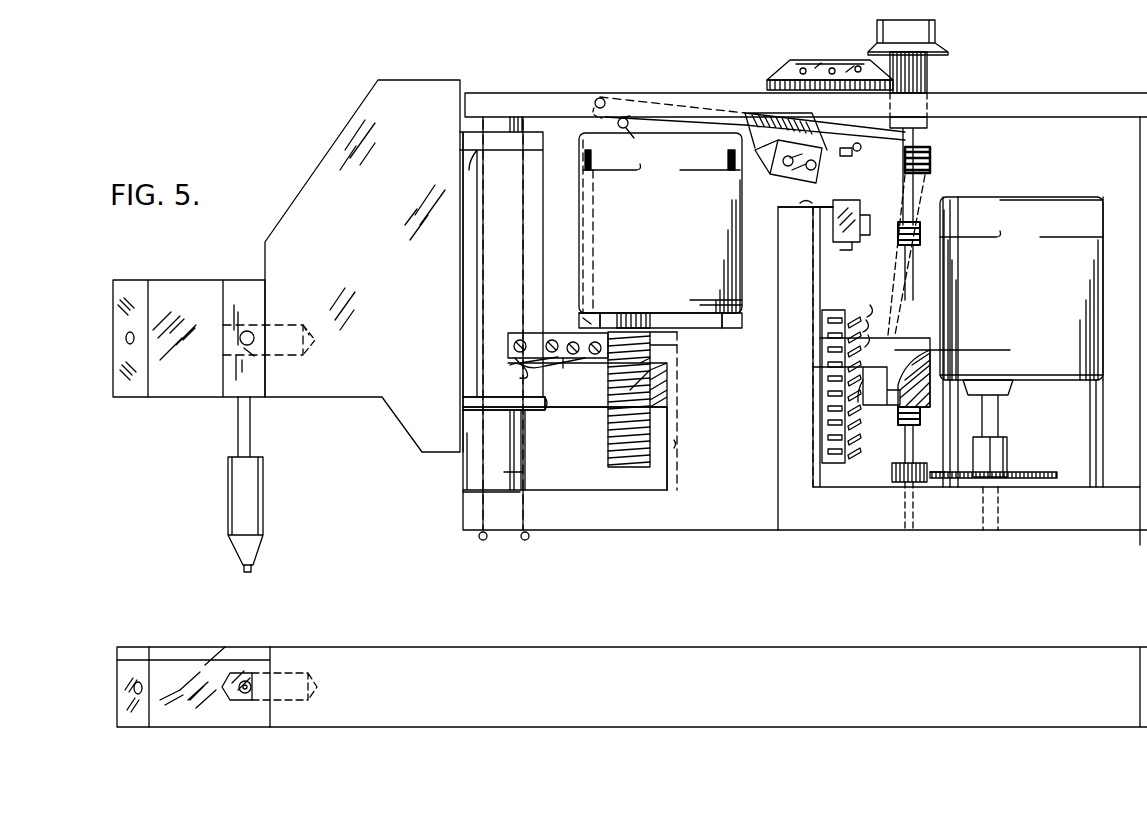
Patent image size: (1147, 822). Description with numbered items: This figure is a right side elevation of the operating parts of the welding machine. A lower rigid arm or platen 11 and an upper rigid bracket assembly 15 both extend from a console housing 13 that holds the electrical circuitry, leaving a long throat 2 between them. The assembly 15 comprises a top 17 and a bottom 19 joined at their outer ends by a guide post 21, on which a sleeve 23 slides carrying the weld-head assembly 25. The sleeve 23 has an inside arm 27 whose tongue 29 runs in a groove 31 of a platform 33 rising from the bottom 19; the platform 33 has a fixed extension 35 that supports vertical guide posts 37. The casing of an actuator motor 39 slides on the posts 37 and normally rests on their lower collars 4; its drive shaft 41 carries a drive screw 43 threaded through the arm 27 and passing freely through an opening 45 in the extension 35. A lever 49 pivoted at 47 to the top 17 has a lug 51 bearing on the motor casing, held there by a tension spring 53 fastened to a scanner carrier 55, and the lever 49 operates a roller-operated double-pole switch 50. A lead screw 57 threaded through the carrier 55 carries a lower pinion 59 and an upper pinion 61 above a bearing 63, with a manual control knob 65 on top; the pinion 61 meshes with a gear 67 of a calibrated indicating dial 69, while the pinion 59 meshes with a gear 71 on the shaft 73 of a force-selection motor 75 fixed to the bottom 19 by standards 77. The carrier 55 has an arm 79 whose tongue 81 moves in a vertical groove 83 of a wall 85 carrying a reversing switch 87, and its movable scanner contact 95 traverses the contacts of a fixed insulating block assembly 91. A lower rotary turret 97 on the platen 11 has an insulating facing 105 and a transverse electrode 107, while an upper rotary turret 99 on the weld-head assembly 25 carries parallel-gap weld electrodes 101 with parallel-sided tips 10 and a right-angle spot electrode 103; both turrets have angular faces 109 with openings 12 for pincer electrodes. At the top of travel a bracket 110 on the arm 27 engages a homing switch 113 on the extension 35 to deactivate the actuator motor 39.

The throat 2 is at (487, 592).
The lower collars 4 is at (594, 314).
The extreme tips 10 is at (252, 570).
The lower rigid arm or platen 11 is at (368, 645).
The openings 12 is at (126, 335).
The console housing 13 is at (1140, 174).
The upper rigid bracket assembly 15 is at (634, 521).
The top 17 is at (555, 91).
The bottom 19 is at (836, 512).
The guide post 21 is at (524, 473).
The sleeve 23 is at (536, 219).
The weld-head assembly 25 is at (305, 181).
The inside arm 27 is at (607, 422).
The tongue 29 is at (678, 409).
The groove 31 is at (676, 444).
The platform 33 is at (764, 441).
The fixed extension 35 is at (668, 345).
The vertical guide posts 37 is at (594, 165).
The actuator motor 39 is at (667, 232).
The drive shaft 41 is at (627, 313).
The drive screw 43 is at (610, 445).
The opening 45 is at (668, 368).
The pivot 47 is at (601, 98).
The lever 49 is at (744, 118).
The roller-operated double-pole, single-throw switch 50 is at (792, 176).
The lug 51 is at (634, 136).
The tension spring 53 is at (926, 157).
The scanner carrier 55 is at (935, 358).
The lead screw 57 is at (922, 233).
The pinion 59 is at (892, 473).
The pinion 61 is at (927, 72).
The bearing 63 is at (927, 123).
The manual control knob 65 is at (878, 28).
The gear 67 is at (770, 80).
The indicating dial 69 is at (810, 63).
The gear 71 is at (1030, 472).
The shaft 73 is at (998, 415).
The force-selection motor 75 is at (1022, 301).
The standards 77 is at (952, 405).
The arm 79 is at (870, 347).
The tongue 81 is at (817, 372).
The vertical groove 83 is at (814, 394).
The wall 85 is at (805, 241).
The roller-operated motor reversing switch 87 is at (850, 212).
The fixed insulating block assembly 91 is at (830, 312).
The movable electrical scanner contact 95 is at (865, 406).
The lower rotary turret 97 is at (177, 728).
The upper rotary turret 99 is at (168, 287).
The parallel-gap weld electrodes 101 is at (244, 555).
The electrode 103 is at (252, 330).
The upper flat insulating facing 105 is at (215, 645).
The electrode 107 is at (242, 698).
The angular faces 109 is at (120, 287).
The bracket 110 is at (520, 402).
The homing switch 113 is at (540, 332).